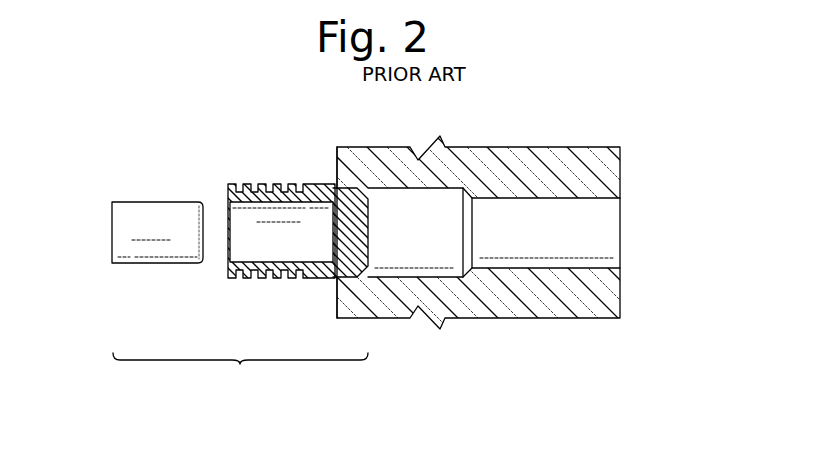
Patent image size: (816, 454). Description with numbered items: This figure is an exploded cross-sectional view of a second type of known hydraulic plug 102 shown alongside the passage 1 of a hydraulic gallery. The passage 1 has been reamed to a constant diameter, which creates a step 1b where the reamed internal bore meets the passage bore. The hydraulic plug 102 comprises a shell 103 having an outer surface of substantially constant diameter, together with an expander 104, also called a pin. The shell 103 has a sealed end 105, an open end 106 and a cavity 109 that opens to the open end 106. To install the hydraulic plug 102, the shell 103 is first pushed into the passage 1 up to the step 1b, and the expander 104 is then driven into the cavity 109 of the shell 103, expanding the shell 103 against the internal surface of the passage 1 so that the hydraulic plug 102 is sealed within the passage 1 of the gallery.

The passage 1 is at (603, 232).
The step 1b is at (467, 217).
The hydraulic plug 102 is at (240, 373).
The shell 103 is at (348, 262).
The expander 104 is at (116, 263).
The sealed end 105 is at (360, 210).
The open end 106 is at (226, 262).
The cavity 109 is at (276, 247).